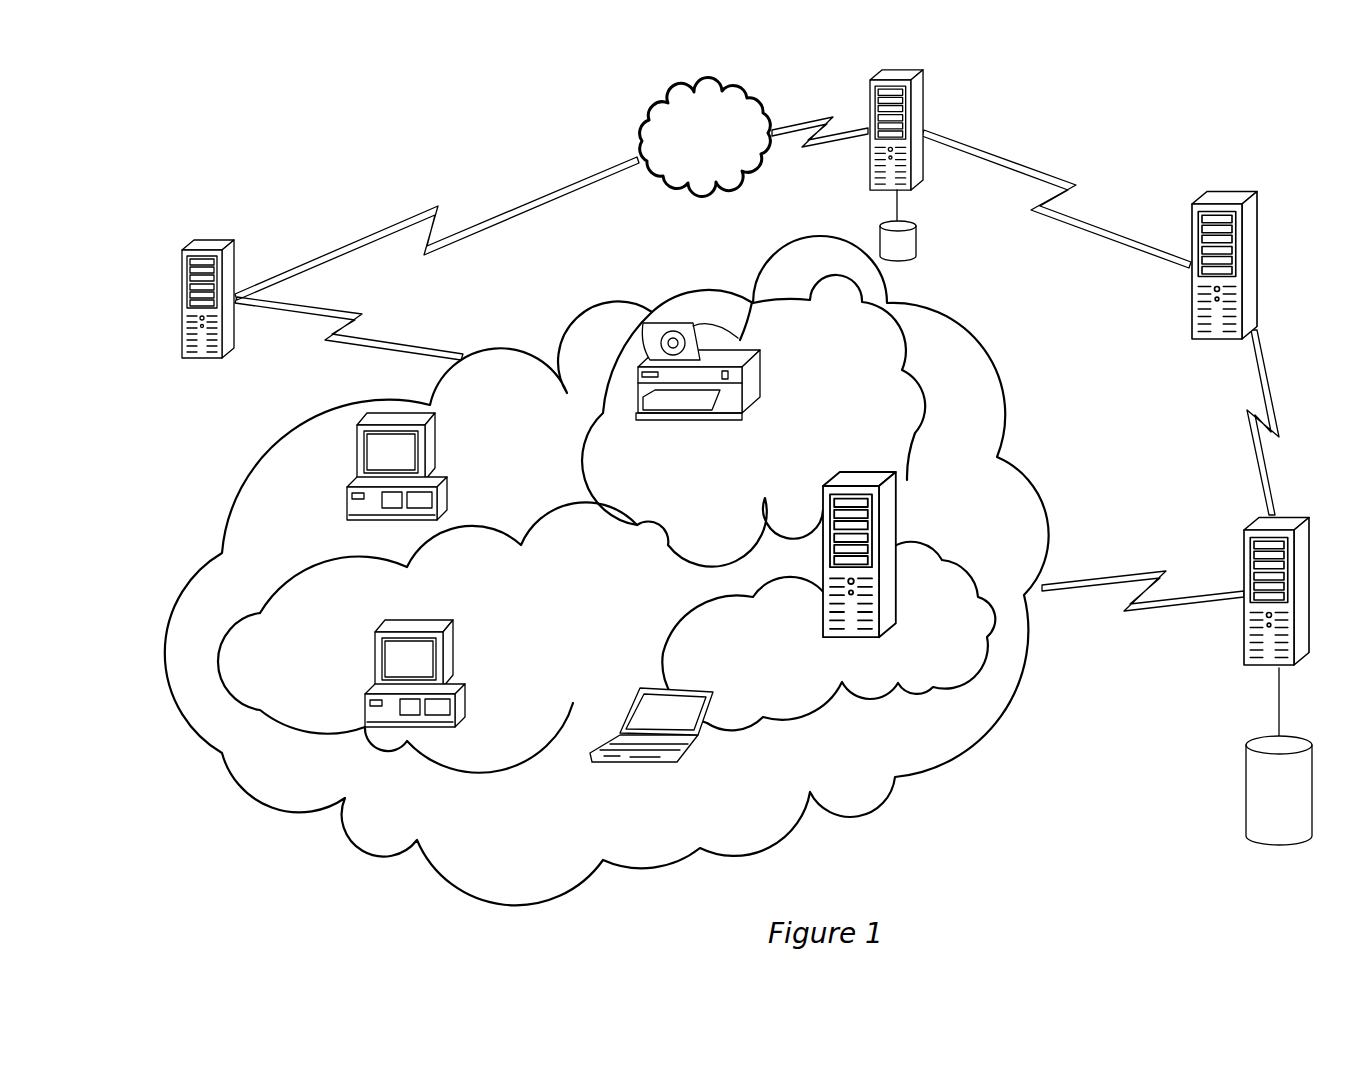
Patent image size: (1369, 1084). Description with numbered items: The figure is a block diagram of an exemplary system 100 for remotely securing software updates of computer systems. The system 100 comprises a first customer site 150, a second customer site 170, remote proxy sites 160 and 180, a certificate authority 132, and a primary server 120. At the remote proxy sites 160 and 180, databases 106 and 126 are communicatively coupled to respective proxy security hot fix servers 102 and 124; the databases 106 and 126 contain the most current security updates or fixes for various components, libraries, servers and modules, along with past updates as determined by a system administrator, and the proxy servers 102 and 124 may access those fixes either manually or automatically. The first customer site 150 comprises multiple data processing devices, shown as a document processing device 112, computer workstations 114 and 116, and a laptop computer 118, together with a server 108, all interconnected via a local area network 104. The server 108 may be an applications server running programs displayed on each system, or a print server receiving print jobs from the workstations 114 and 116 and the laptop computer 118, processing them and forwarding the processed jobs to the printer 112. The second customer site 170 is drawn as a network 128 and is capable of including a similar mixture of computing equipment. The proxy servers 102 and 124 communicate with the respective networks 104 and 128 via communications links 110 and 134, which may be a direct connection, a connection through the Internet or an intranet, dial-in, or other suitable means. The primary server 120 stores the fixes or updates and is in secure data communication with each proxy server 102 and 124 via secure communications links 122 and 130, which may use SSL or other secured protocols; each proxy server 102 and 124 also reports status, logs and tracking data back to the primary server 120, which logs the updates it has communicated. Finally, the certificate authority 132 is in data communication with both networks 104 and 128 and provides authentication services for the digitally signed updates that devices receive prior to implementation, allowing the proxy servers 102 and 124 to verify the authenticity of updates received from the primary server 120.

The system 100 is at (282, 166).
The proxy security hot fix server 102 is at (1298, 517).
The local area network 104 is at (960, 322).
The database 106 is at (1304, 741).
The server 108 is at (882, 472).
The communications link 110 is at (1146, 575).
The document processing device 112 is at (752, 346).
The computer workstation 114 is at (429, 412).
The computer workstation 116 is at (443, 621).
The laptop computer 118 is at (712, 688).
The primary server 120 is at (1248, 190).
The secure communications link 122 is at (1270, 396).
The proxy security hot fix server 124 is at (922, 109).
The database 126 is at (914, 240).
The network 128 is at (650, 144).
The secure communications link 130 is at (1064, 208).
The certificate authority 132 is at (230, 245).
The communications link 134 is at (818, 116).
The first customer site 150 is at (884, 826).
The remote proxy site 160 is at (1256, 858).
The second customer site 170 is at (704, 205).
The remote proxy site 180 is at (978, 99).